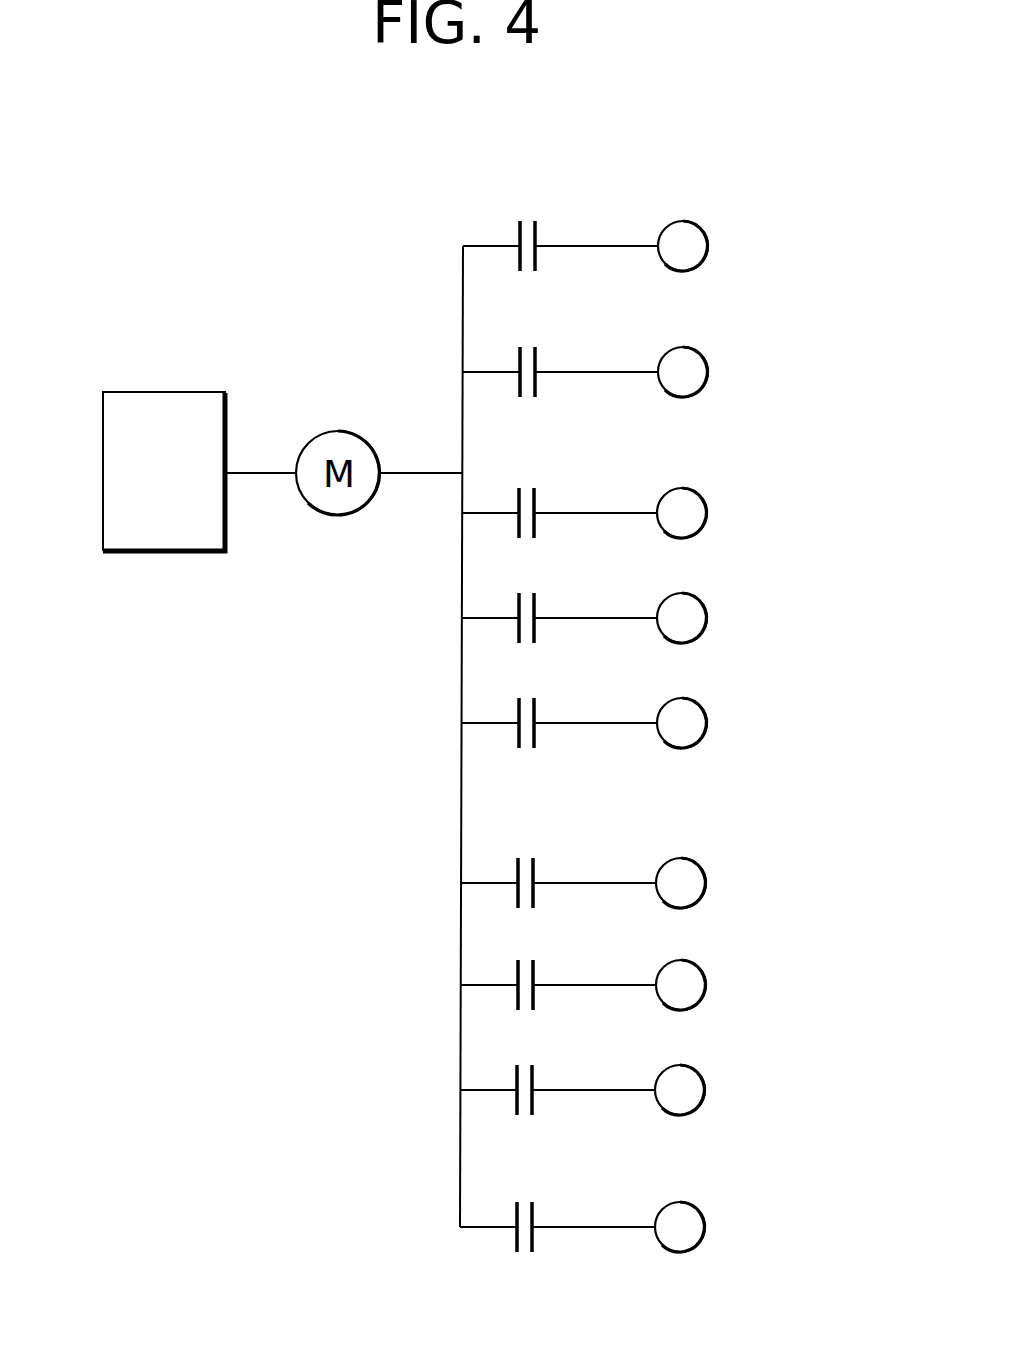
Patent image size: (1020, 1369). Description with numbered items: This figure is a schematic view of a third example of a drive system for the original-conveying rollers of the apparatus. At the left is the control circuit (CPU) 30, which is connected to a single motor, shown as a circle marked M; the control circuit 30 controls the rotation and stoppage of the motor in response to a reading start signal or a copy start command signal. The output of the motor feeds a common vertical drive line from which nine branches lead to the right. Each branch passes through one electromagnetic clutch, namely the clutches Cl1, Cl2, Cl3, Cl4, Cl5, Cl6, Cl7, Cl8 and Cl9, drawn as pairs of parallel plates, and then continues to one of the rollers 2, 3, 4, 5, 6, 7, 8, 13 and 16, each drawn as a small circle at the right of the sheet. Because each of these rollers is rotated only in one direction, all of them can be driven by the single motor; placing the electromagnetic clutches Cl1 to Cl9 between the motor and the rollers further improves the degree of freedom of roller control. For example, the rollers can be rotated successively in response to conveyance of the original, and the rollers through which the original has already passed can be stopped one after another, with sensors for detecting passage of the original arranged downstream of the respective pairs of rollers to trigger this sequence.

The control circuit (CPU) 30 is at (164, 392).
The roller 2 is at (698, 249).
The roller 3 is at (698, 375).
The roller 4 is at (697, 516).
The roller 5 is at (697, 621).
The roller 6 is at (697, 726).
The roller 7 is at (696, 886).
The roller 8 is at (696, 988).
The roller 13 is at (695, 1093).
The roller 16 is at (695, 1230).
The electromagnetic clutch Cl1 is at (537, 229).
The electromagnetic clutch Cl2 is at (537, 355).
The electromagnetic clutch Cl3 is at (536, 496).
The electromagnetic clutch Cl4 is at (536, 601).
The electromagnetic clutch Cl5 is at (536, 706).
The electromagnetic clutch Cl6 is at (535, 866).
The electromagnetic clutch Cl7 is at (535, 968).
The electromagnetic clutch Cl8 is at (534, 1073).
The electromagnetic clutch Cl9 is at (534, 1210).